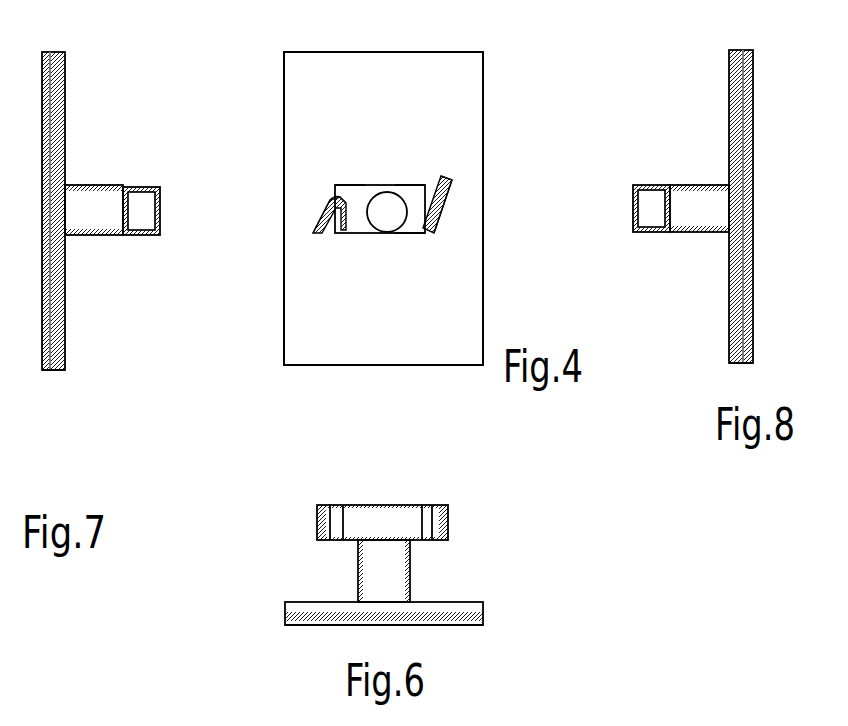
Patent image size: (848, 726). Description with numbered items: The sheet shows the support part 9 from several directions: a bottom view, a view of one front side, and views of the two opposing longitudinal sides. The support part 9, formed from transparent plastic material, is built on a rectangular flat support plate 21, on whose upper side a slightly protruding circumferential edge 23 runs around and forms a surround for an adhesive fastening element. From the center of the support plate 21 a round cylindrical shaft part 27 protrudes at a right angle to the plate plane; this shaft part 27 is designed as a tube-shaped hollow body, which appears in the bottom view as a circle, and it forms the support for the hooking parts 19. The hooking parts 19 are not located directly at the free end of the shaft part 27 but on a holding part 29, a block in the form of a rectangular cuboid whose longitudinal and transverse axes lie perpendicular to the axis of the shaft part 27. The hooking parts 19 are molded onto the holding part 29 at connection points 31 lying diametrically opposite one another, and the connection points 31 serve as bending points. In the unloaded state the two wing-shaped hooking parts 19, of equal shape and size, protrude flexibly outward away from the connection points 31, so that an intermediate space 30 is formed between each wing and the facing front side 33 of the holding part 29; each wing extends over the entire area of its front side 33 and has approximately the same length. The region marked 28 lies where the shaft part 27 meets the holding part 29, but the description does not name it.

In FIG. 7, the support part 9 is at (268, 530).
In FIG. 4, the support part 9 is at (660, 113).
In FIG. 7, the hooking parts 19 is at (138, 222).
In FIG. 4, the hooking parts 19 is at (316, 218).
In FIG. 8, the hooking parts 19 is at (643, 188).
In FIG. 6, the hooking parts 19 is at (316, 503).
In FIG. 7, the support plate 21 is at (62, 80).
In FIG. 4, the support plate 21 is at (298, 318).
In FIG. 8, the support plate 21 is at (728, 298).
In FIG. 6, the support plate 21 is at (477, 603).
In FIG. 7, the circumferential edge 23 is at (42, 372).
In FIG. 8, the circumferential edge 23 is at (755, 366).
In FIG. 6, the circumferential edge 23 is at (487, 618).
In FIG. 7, the shaft part 27 is at (90, 187).
In FIG. 4, the shaft part 27 is at (385, 234).
In FIG. 8, the shaft part 27 is at (700, 194).
In FIG. 6, the shaft part 27 is at (411, 567).
In FIG. 6, the transition between stem and head 28 is at (357, 541).
In FIG. 7, the holding part 29 is at (161, 207).
In FIG. 4, the holding part 29 is at (408, 184).
In FIG. 8, the holding part 29 is at (632, 208).
In FIG. 6, the holding part 29 is at (372, 503).
In FIG. 4, the intermediate space 30 is at (325, 236).
In FIG. 4, the connection points 31 is at (334, 184).
In FIG. 4, the front side 33 is at (331, 234).